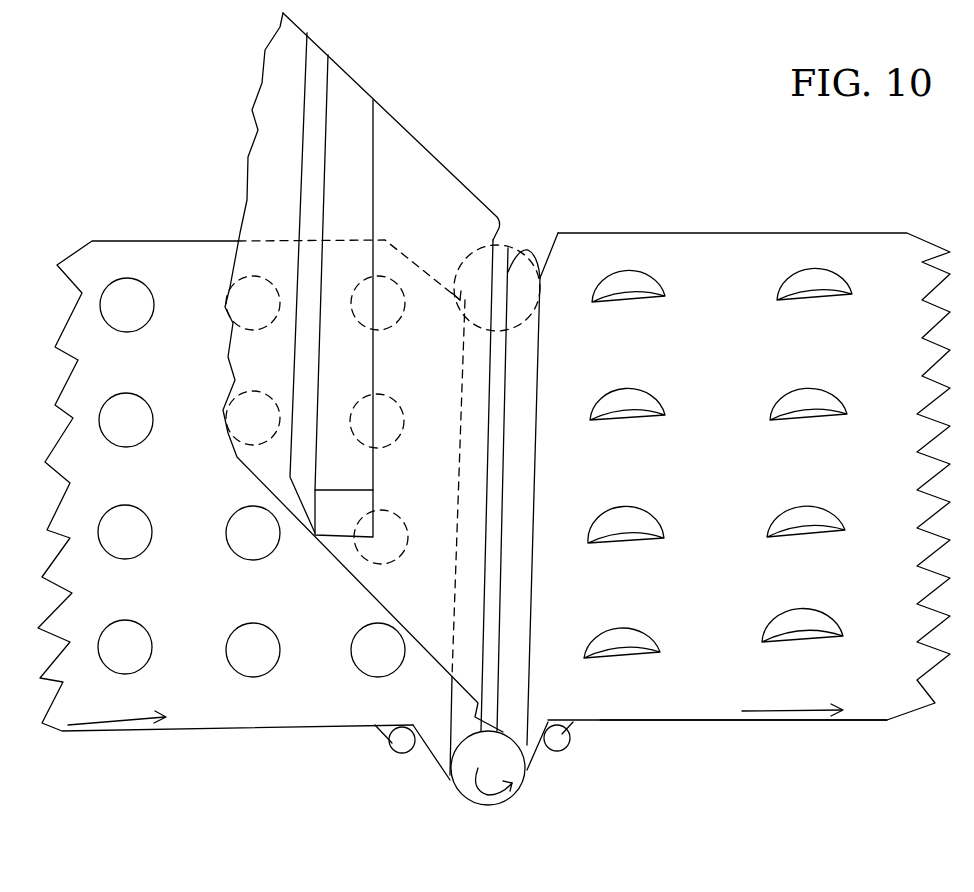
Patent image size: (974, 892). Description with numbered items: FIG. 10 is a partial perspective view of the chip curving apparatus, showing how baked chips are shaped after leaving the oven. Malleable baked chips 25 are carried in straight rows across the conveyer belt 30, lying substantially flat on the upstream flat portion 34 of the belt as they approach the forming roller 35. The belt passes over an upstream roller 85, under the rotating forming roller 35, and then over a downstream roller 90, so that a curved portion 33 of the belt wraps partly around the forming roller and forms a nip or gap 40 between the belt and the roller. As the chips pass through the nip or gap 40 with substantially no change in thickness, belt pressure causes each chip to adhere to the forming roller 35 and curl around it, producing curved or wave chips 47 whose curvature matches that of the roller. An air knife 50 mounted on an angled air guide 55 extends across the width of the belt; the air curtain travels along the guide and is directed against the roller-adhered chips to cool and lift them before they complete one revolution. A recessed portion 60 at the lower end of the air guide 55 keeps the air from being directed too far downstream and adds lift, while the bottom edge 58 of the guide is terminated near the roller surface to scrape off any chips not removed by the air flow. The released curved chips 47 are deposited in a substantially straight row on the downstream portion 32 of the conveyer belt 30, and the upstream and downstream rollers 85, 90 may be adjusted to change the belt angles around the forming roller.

The flat portion of the conveyer belt 34 is at (142, 253).
The malleable baked chips 25 is at (253, 657).
The air knife 50 is at (357, 107).
The air guide 55 is at (430, 177).
The bottom edge of the air flow guide 58 is at (513, 272).
The recessed portion of the air guide 60 is at (508, 245).
The conveyer belt 30 is at (762, 248).
The curved or wave chips 47 is at (627, 285).
The nip or gap 40 is at (443, 775).
The forming roller 35 is at (467, 800).
The curved portion of the conveyer belt 33 is at (525, 775).
The upstream roller 85 is at (388, 743).
The downstream roller 90 is at (566, 746).
The downstream portion of the conveyer belt 32 is at (698, 700).